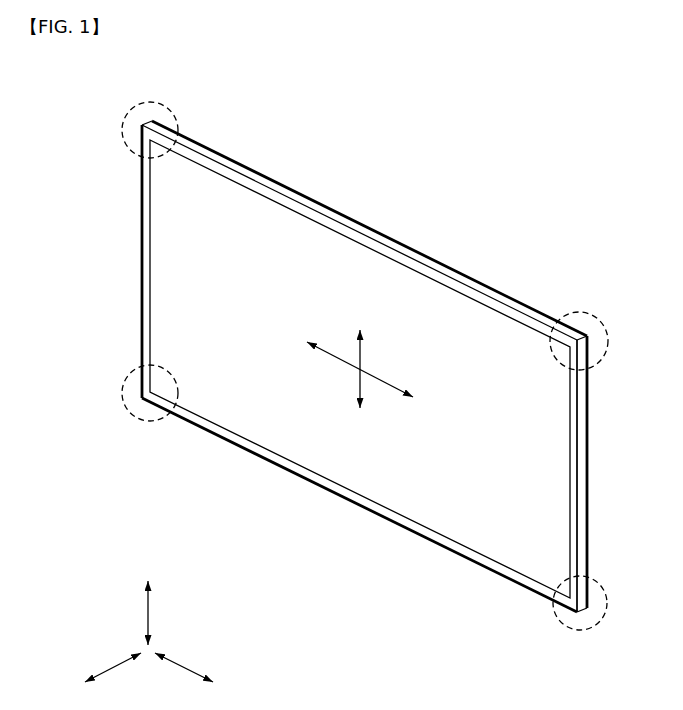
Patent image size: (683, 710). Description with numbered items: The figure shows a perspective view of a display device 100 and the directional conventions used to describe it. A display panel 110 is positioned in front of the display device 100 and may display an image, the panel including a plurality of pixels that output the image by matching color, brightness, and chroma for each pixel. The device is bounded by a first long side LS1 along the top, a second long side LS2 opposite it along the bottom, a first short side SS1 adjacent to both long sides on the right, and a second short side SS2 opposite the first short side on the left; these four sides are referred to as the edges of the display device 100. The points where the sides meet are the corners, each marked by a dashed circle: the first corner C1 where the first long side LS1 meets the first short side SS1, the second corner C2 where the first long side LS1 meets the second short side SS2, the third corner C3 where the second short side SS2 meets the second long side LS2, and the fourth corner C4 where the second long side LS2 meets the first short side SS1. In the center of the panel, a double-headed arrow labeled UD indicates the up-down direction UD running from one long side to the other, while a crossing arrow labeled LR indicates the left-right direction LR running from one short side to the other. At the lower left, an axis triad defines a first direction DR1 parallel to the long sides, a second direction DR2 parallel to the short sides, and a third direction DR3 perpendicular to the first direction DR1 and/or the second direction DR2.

The display device 100 is at (366, 366).
The display panel 110 is at (170, 315).
The first long side LS1 is at (466, 285).
The second long side LS2 is at (215, 435).
The first short side SS1 is at (573, 479).
The second short side SS2 is at (146, 256).
The first corner C1 is at (595, 341).
The second corner C2 is at (138, 130).
The third corner C3 is at (139, 393).
The fourth corner C4 is at (597, 603).
The up-down direction UD is at (360, 355).
The left-right direction LR is at (372, 376).
The first direction DR1 is at (204, 675).
The second direction DR2 is at (147, 600).
The third direction DR3 is at (93, 675).